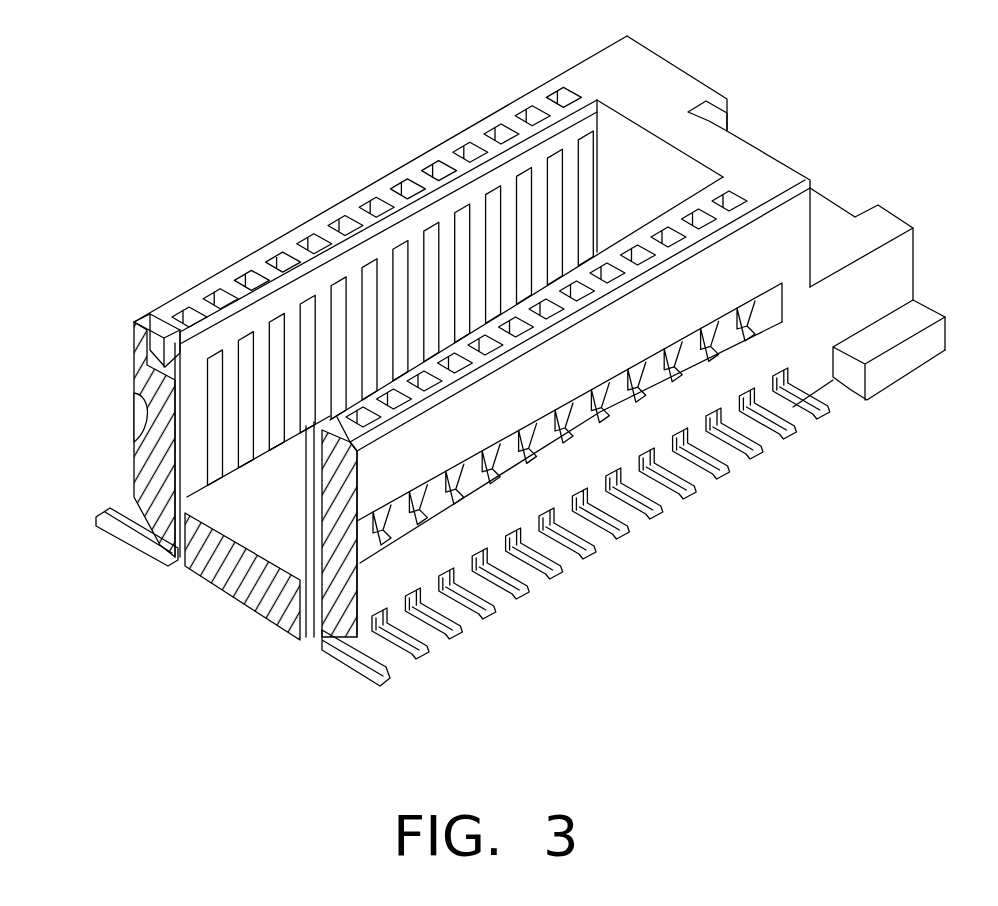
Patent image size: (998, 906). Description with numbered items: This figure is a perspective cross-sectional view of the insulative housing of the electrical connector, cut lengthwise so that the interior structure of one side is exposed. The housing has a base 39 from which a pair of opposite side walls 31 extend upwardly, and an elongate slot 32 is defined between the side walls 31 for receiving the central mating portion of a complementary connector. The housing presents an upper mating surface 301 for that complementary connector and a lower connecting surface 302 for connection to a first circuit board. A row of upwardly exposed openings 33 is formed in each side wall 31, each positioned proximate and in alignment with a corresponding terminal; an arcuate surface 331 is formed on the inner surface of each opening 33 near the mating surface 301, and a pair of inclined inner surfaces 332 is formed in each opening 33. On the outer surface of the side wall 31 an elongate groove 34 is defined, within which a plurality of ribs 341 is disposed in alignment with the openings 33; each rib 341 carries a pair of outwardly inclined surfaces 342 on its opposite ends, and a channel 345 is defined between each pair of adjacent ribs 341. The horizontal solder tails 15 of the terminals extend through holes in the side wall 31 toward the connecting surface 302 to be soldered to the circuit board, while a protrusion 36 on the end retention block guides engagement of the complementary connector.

The solder tail 15 is at (370, 667).
The side wall 31 is at (313, 218).
The elongate slot 32 is at (655, 162).
The opening 33 is at (500, 136).
The arcuate surface 331 is at (549, 95).
The inclined inner surface 332 is at (136, 376).
The elongate groove 34 is at (770, 303).
The rib 341 is at (742, 307).
The outwardly inclined surface 342 is at (317, 637).
The channel 345 is at (598, 388).
The protrusion 36 is at (653, 50).
The base 39 is at (222, 572).
The mating surface 301 is at (730, 157).
The connecting surface 302 is at (813, 397).